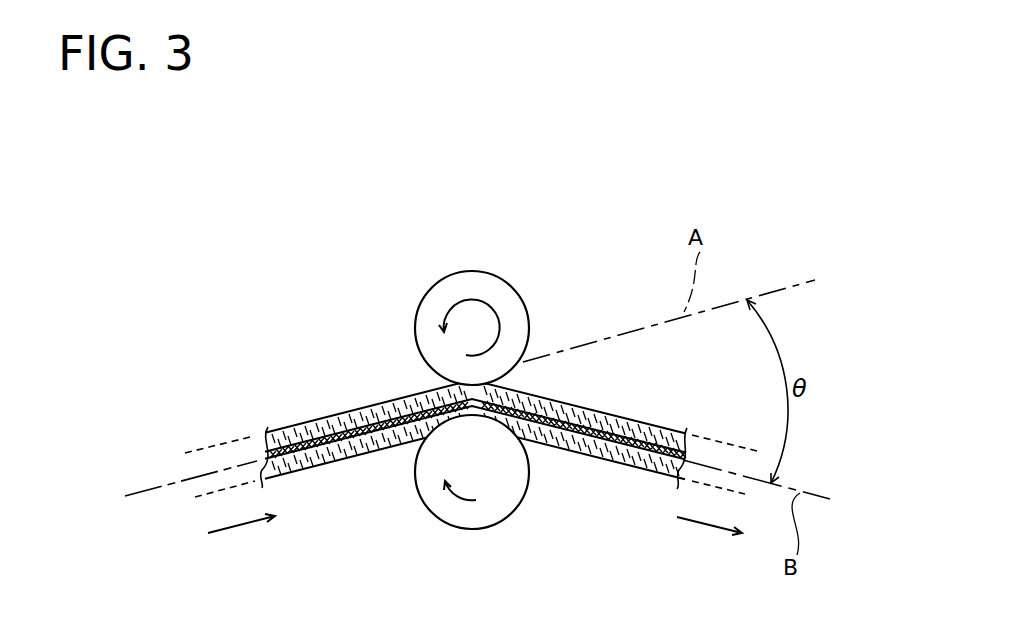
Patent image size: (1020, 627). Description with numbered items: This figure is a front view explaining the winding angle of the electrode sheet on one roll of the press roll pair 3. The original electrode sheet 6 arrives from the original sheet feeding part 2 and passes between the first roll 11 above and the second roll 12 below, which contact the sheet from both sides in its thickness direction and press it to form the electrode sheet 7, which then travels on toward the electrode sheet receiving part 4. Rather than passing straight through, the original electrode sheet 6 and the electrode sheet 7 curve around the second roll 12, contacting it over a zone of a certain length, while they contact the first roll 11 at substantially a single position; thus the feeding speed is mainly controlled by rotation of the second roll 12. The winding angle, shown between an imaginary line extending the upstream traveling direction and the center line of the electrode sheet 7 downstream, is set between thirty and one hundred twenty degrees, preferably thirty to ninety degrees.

The press roll pair 3 is at (482, 404).
The first roll 11 is at (478, 272).
The second roll 12 is at (497, 523).
The original electrode sheet 6 is at (340, 414).
The electrode sheet 7 is at (595, 458).
The original sheet feeding part 2 is at (110, 512).
The electrode sheet receiving part 4 is at (886, 514).